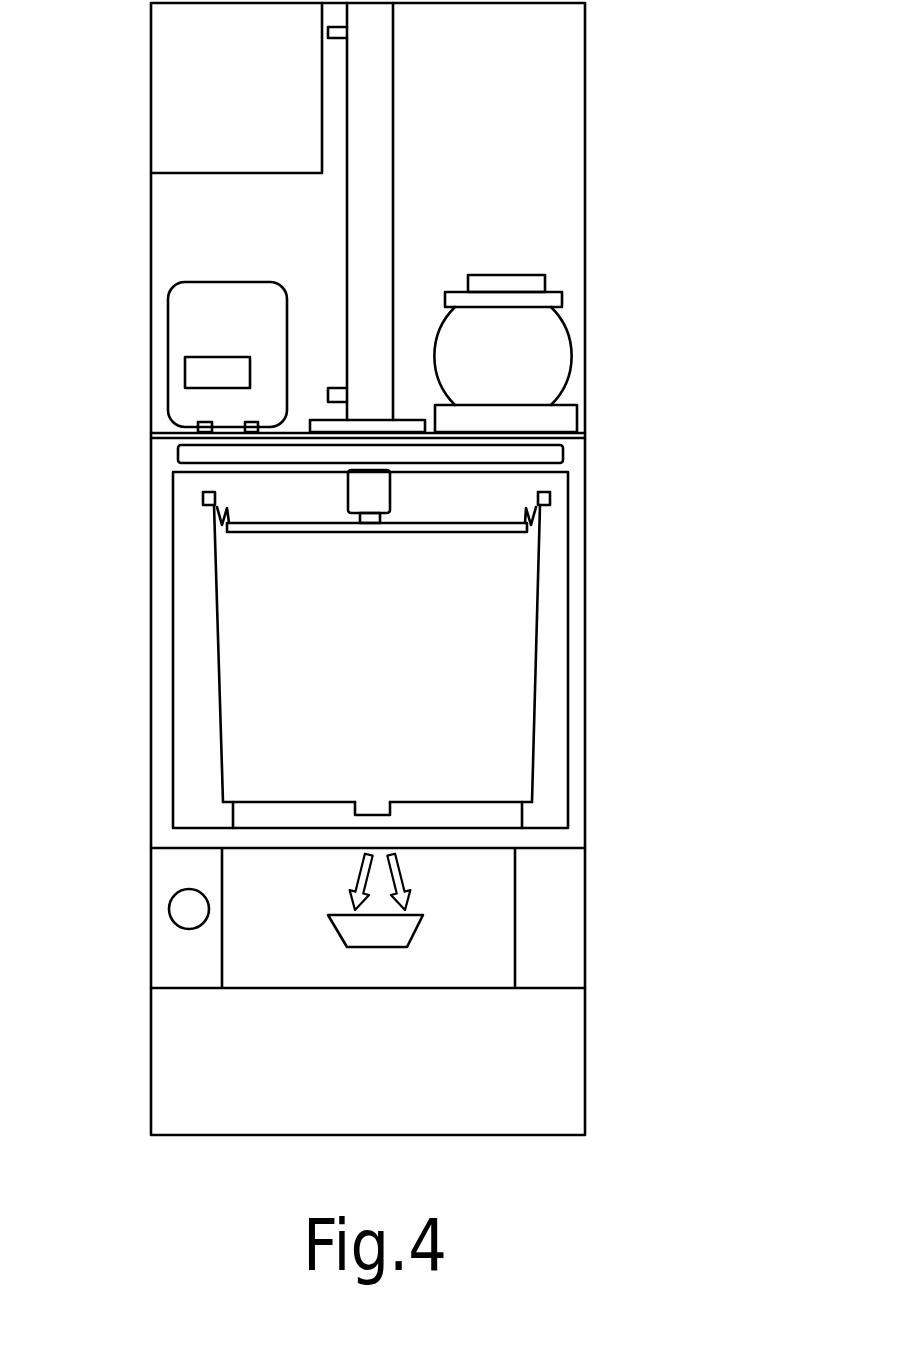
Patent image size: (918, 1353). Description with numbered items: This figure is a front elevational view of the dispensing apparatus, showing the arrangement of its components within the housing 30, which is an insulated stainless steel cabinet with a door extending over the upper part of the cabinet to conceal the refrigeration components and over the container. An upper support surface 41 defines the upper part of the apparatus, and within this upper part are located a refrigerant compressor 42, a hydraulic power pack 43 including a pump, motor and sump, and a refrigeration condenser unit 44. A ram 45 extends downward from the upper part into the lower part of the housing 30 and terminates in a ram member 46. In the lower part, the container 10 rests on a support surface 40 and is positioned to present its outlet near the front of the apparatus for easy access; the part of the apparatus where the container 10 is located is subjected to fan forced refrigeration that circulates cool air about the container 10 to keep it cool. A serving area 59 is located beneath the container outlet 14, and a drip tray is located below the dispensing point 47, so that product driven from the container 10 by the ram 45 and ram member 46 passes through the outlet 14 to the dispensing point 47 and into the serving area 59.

The container 10 is at (382, 678).
The container outlet 14 is at (378, 813).
The housing 30 is at (605, 238).
The support surface 40 is at (547, 823).
The upper support surface 41 is at (170, 433).
The refrigerant compressor 42 is at (193, 320).
The hydraulic power pack 43 is at (545, 357).
The refrigeration condenser unit 44 is at (180, 62).
The ram 45 is at (387, 165).
The ram member 46 is at (363, 530).
The dispensing point 47 is at (488, 922).
The serving area 59 is at (350, 927).